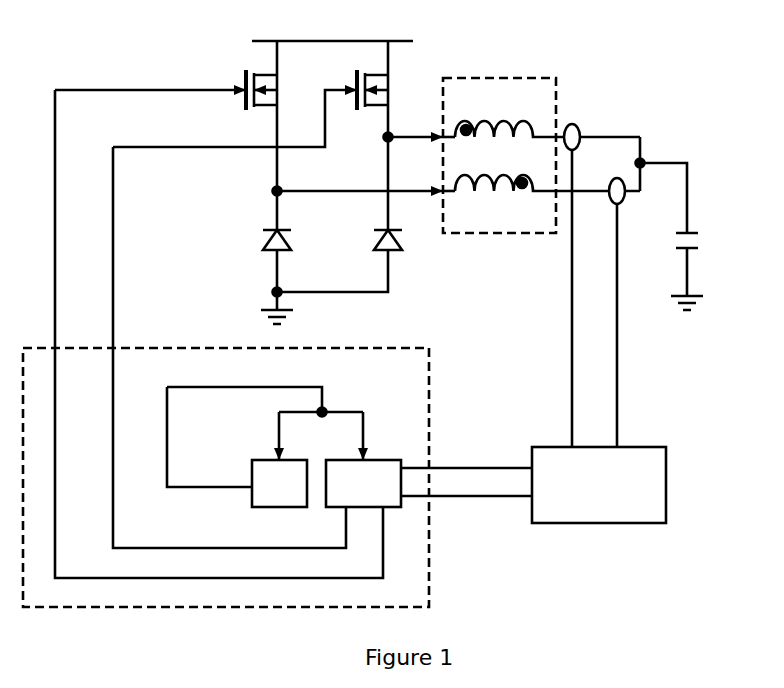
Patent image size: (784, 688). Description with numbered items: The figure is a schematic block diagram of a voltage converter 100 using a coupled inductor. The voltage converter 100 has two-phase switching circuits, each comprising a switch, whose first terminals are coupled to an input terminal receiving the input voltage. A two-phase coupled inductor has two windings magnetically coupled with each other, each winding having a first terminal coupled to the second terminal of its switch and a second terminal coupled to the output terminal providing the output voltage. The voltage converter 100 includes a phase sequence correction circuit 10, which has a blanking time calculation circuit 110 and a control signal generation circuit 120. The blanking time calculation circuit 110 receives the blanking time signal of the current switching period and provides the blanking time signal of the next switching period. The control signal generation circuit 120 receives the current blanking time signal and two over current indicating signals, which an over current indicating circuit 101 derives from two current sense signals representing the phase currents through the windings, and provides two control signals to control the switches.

The voltage converter 100 is at (666, 83).
The phase sequence correction circuit 10 is at (418, 384).
The blanking time calculation circuit 110 is at (298, 494).
The control signal generation circuit 120 is at (382, 494).
The over current indicating circuit 101 is at (619, 496).